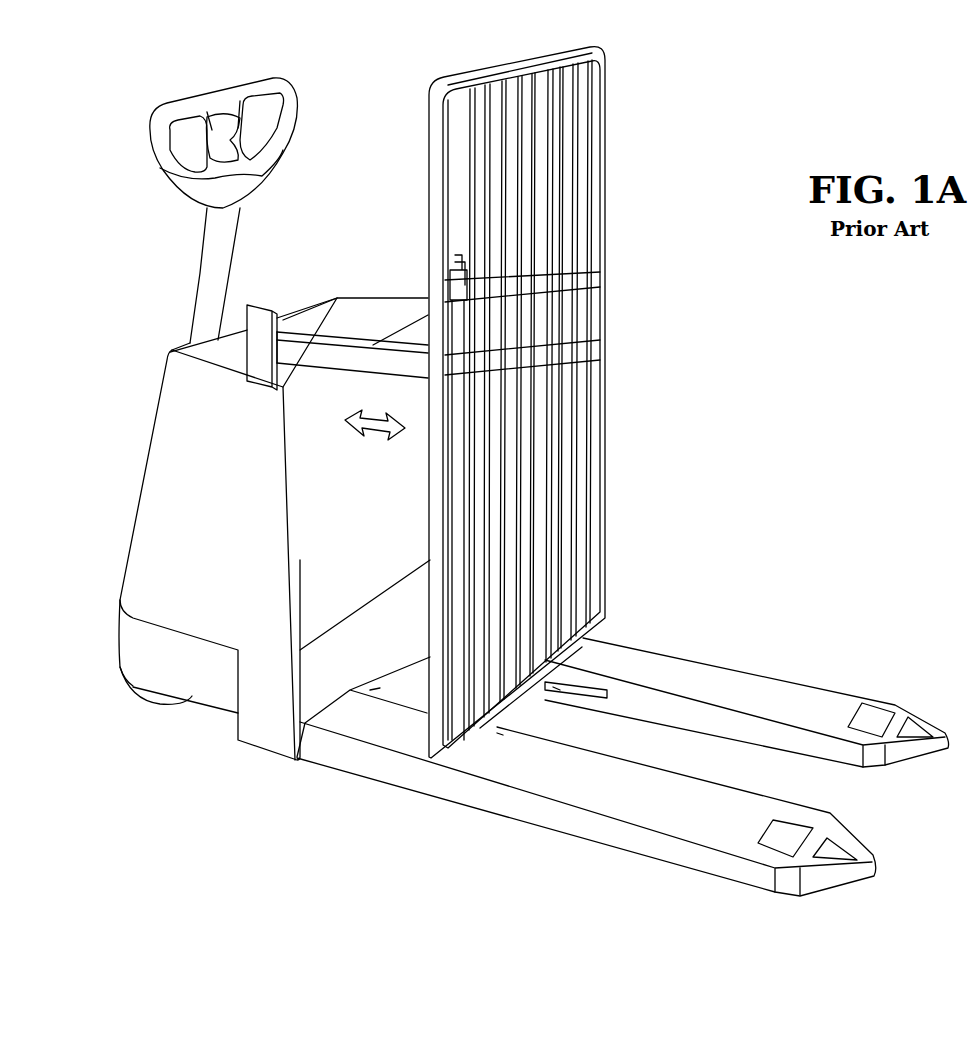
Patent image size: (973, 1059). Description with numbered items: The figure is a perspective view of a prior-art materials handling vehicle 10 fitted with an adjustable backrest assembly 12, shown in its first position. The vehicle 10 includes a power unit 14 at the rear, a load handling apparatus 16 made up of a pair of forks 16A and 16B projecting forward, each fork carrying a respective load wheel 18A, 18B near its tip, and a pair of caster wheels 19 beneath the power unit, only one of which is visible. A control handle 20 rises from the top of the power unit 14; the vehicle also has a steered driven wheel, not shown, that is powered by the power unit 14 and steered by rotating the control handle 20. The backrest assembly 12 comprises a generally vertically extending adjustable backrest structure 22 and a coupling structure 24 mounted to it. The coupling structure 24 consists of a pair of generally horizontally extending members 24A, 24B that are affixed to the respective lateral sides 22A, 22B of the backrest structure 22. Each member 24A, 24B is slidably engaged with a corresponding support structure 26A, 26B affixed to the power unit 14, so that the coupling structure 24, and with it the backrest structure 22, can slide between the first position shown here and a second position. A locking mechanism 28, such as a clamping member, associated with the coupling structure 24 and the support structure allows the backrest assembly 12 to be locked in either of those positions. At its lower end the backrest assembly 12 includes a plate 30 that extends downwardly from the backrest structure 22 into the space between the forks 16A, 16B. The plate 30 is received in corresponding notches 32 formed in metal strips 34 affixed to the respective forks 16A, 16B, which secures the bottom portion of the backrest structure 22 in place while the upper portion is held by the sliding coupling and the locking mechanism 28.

The materials handling vehicle 10 is at (660, 99).
The backrest assembly 12 is at (507, 402).
The power unit 14 is at (145, 470).
The load handling apparatus 16 is at (623, 741).
The fork 16A is at (720, 680).
The fork 16B is at (667, 790).
The load wheel 18A is at (873, 717).
The load wheel 18B is at (787, 837).
The caster wheel 19 is at (165, 707).
The control handle 20 is at (197, 103).
The backrest structure 22 is at (519, 402).
The lateral side of backrest structure 22A is at (517, 402).
The lateral side of backrest structure 22B is at (430, 283).
The coupling structure 24 is at (352, 327).
The horizontally extending member 24A is at (455, 258).
The horizontally extending member 24B is at (370, 355).
The support structure 26A is at (445, 272).
The support structure 26B is at (258, 350).
The locking mechanism 28 is at (300, 340).
The plate 30 is at (507, 713).
The notch 32 is at (428, 658).
The metal strip 34 is at (578, 664).